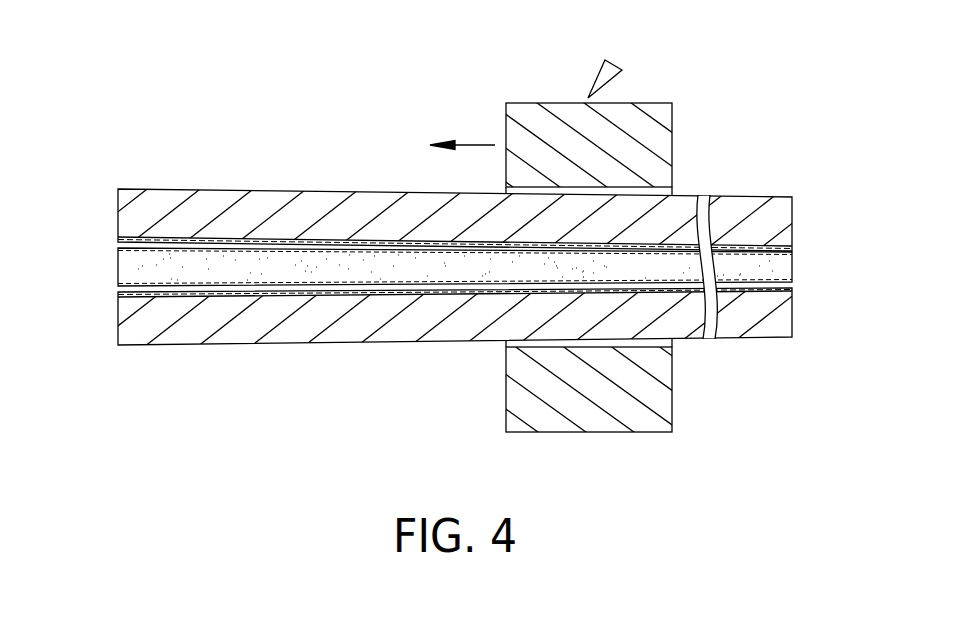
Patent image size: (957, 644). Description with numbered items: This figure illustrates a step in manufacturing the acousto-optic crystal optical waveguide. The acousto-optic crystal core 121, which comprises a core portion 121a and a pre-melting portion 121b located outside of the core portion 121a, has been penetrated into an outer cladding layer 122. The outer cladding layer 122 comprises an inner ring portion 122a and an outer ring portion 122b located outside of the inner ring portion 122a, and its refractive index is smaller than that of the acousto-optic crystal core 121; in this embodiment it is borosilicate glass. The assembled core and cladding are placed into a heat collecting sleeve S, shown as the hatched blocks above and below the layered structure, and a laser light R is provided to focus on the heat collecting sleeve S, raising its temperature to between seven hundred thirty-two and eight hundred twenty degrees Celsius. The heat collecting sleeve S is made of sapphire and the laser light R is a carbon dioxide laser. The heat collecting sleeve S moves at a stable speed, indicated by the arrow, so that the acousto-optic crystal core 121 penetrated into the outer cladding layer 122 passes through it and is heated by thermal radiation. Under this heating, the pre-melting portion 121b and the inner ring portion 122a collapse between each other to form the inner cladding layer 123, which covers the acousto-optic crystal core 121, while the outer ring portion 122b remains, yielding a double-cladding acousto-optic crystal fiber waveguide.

The acousto-optic crystal core 121 is at (443, 356).
The core portion 121a is at (323, 397).
The pre-melting portion 121b is at (313, 282).
The outer cladding layer 122 is at (465, 159).
The inner ring portion 122a is at (265, 120).
The outer ring portion 122b is at (261, 213).
The inner cladding layer 123 is at (752, 250).
The heat collecting sleeve S is at (528, 118).
The laser light R is at (597, 77).